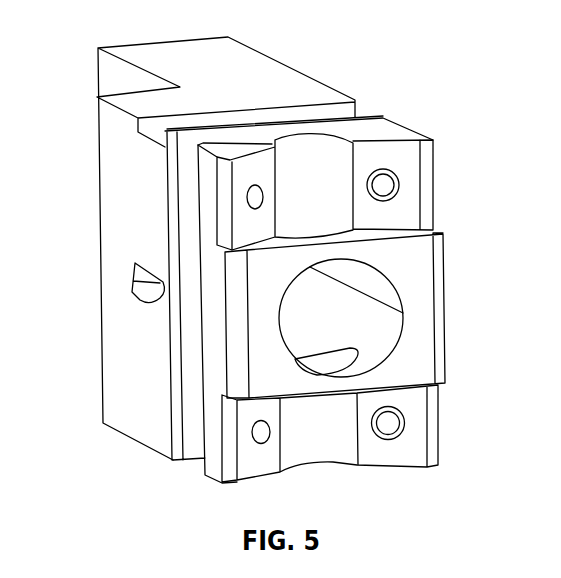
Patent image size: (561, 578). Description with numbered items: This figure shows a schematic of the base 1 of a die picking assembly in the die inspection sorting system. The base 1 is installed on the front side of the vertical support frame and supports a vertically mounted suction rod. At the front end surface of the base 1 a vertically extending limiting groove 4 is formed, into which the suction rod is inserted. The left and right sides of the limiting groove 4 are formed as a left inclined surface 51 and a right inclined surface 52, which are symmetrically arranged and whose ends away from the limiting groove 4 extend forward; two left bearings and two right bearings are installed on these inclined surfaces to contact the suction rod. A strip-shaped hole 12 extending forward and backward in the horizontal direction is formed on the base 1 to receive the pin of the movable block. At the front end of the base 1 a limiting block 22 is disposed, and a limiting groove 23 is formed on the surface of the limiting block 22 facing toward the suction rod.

The base 1 is at (230, 77).
The limiting groove 4 is at (320, 175).
The strip-shaped hole 12 is at (147, 285).
The limiting block 22 is at (420, 359).
The limiting groove 23 is at (325, 238).
The left inclined surface 51 is at (245, 170).
The right inclined surface 52 is at (390, 215).